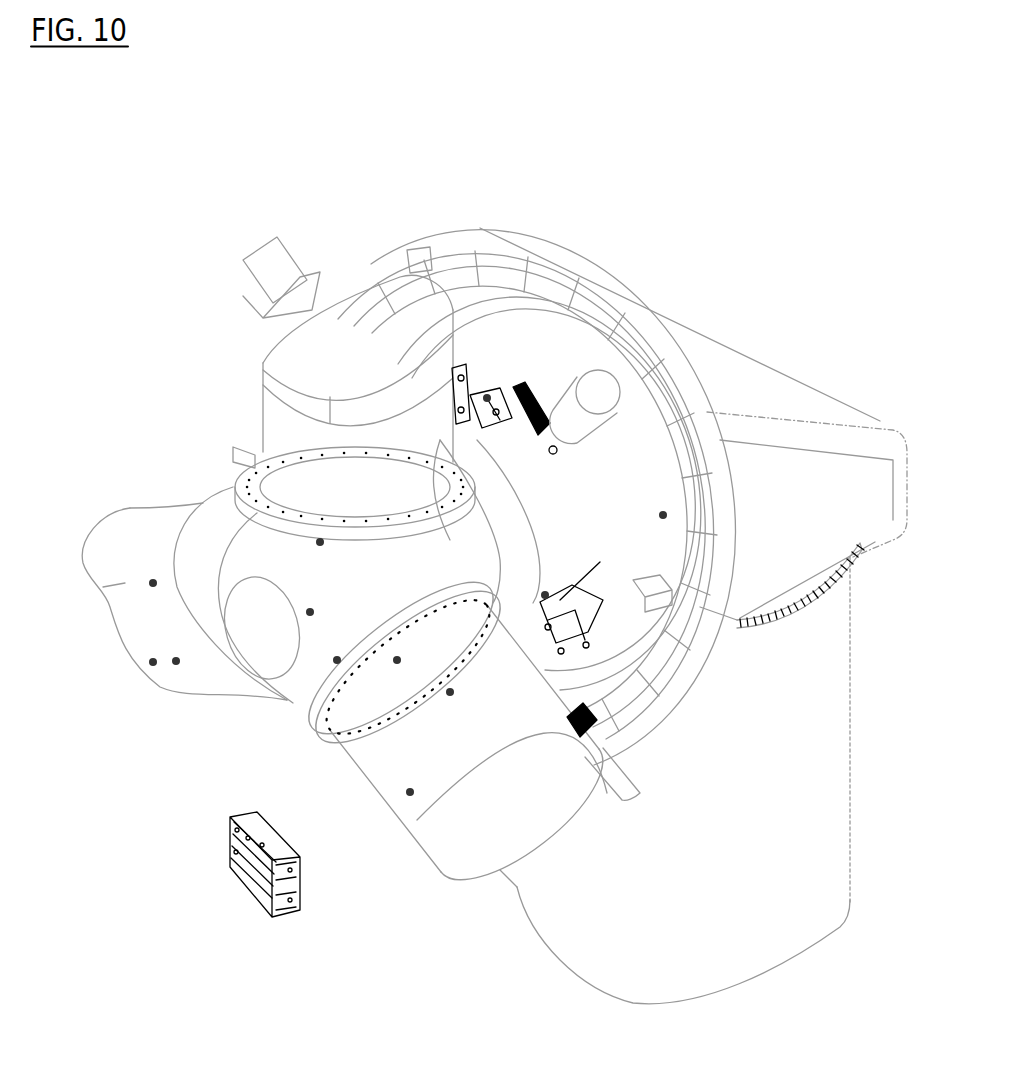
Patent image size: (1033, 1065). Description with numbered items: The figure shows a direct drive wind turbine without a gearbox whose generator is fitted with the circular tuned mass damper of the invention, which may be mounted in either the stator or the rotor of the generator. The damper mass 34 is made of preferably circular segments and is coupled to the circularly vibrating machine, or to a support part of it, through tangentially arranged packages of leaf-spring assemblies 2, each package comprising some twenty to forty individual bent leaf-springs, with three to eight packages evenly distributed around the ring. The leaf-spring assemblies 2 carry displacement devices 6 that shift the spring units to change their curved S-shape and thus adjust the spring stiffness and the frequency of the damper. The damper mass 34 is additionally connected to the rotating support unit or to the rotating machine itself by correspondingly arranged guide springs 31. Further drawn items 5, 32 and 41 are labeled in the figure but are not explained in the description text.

The leaf-spring assemblies 2 is at (600, 330).
The pitch drive 5 is at (300, 297).
The displacement devices 6 is at (680, 327).
The guide springs 31 is at (430, 253).
The gear ring 32 is at (763, 628).
The damper mass 34 is at (475, 337).
The sensor 41 is at (487, 398).